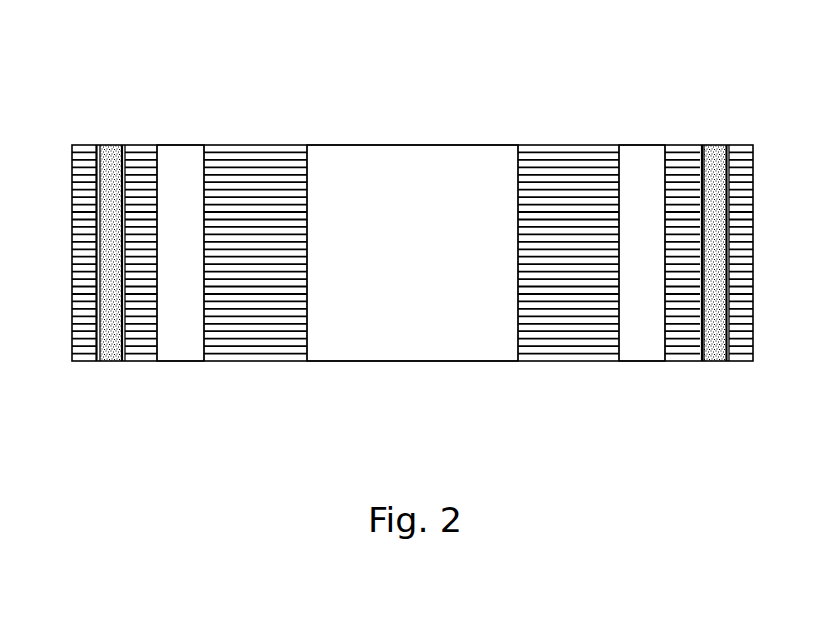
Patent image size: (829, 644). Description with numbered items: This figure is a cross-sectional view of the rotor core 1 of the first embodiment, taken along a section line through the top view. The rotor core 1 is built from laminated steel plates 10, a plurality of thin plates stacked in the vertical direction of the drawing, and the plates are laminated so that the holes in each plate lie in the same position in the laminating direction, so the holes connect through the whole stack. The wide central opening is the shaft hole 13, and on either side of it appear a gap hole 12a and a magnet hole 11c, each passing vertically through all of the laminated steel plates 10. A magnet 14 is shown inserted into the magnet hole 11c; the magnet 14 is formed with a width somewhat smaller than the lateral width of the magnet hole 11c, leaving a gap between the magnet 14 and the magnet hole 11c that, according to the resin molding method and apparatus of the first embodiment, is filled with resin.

The rotor core 1 is at (395, 56).
The laminated steel plates 10 is at (53, 145).
The magnet hole 11c is at (110, 145).
The gap hole 12a is at (181, 160).
The shaft hole 13 is at (407, 150).
The magnet 14 is at (121, 146).